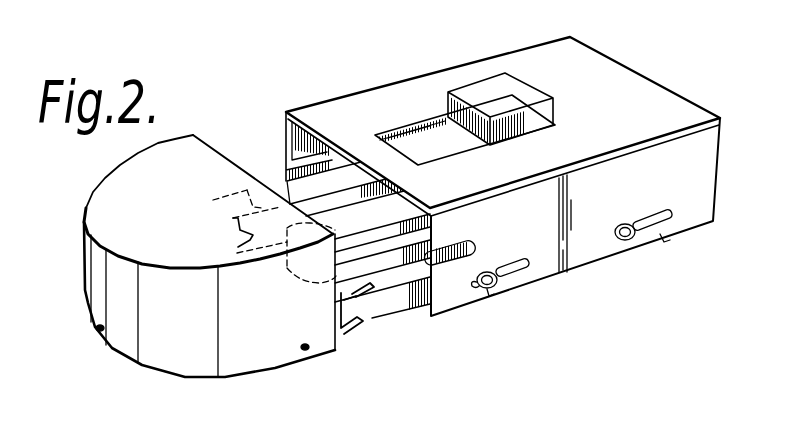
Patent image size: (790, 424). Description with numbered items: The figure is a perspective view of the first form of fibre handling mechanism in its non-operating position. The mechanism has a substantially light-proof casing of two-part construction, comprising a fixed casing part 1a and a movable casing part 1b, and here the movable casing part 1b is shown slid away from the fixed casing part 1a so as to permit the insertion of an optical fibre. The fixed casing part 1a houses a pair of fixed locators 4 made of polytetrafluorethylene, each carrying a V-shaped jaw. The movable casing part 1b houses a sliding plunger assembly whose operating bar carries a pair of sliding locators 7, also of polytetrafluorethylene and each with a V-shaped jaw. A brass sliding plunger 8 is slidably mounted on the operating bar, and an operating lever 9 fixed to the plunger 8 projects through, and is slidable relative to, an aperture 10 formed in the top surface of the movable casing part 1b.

The fixed casing part 1a is at (168, 233).
The movable casing part 1b is at (641, 131).
The fixed locators 4 is at (362, 305).
The sliding locators 7 is at (285, 190).
The sliding plunger 8 is at (338, 148).
The operating lever 9 is at (497, 86).
The aperture 10 is at (440, 157).